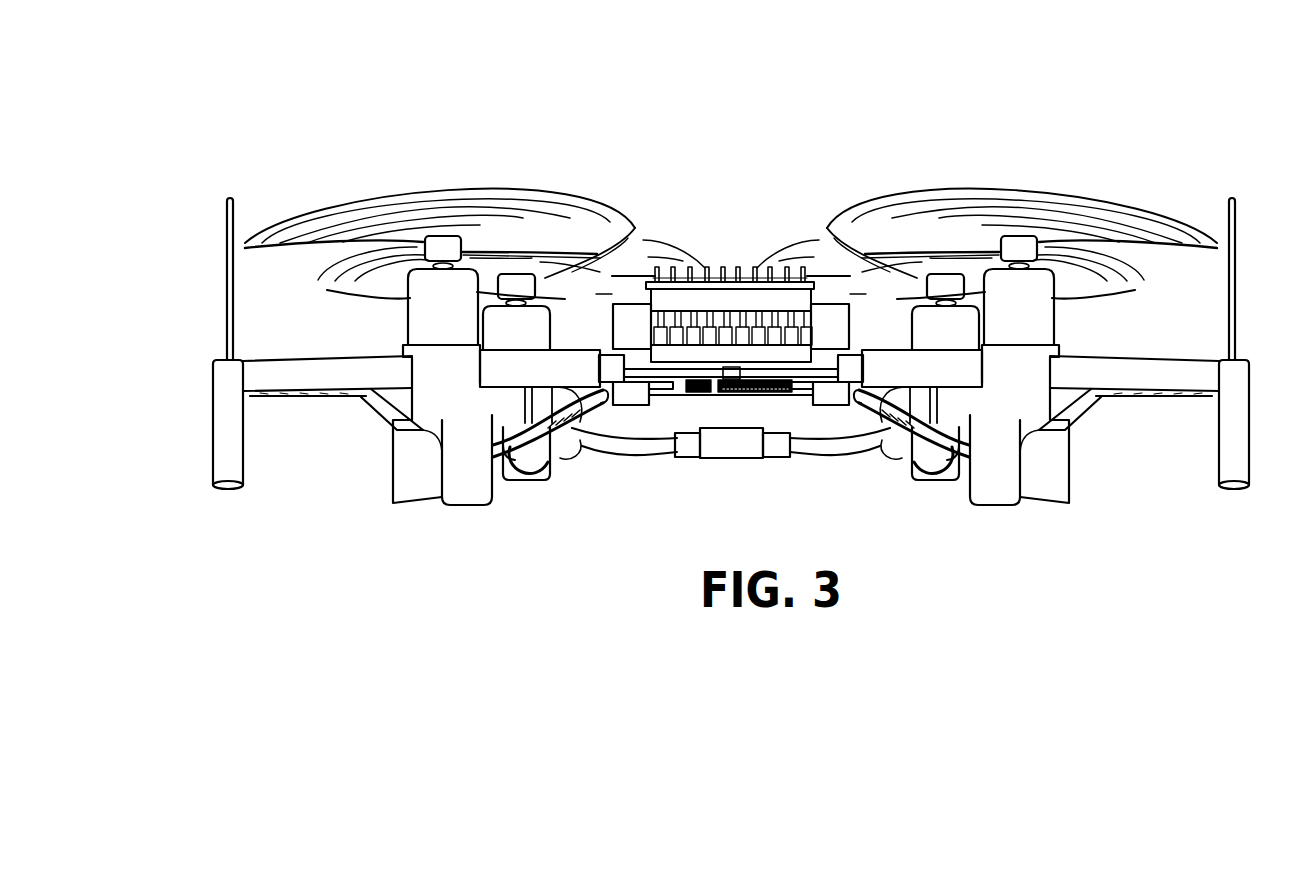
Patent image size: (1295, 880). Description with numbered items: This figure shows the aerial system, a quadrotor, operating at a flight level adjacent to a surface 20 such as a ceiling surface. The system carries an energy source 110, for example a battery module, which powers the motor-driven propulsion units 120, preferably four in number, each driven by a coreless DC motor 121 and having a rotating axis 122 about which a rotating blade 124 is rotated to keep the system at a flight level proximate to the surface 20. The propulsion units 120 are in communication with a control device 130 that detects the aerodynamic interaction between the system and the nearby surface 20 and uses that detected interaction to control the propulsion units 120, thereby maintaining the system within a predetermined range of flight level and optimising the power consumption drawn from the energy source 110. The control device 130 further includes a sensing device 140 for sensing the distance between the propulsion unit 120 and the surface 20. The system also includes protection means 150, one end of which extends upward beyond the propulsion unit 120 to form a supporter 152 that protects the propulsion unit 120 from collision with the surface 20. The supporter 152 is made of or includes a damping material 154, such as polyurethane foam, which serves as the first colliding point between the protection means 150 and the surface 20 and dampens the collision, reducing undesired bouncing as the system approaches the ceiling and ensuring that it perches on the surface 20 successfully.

The surface 20 is at (668, 300).
The energy source 110 is at (735, 402).
The control device 130 is at (730, 289).
The sensing device 140 is at (723, 320).
The propulsion unit 120 is at (1068, 330).
The coreless DC motor 121 is at (1084, 392).
The rotating axis 122 is at (1019, 252).
The rotating blade 124 is at (1072, 242).
The protection means 150 is at (165, 395).
The supporter 152 is at (225, 328).
The damping material 154 is at (225, 202).